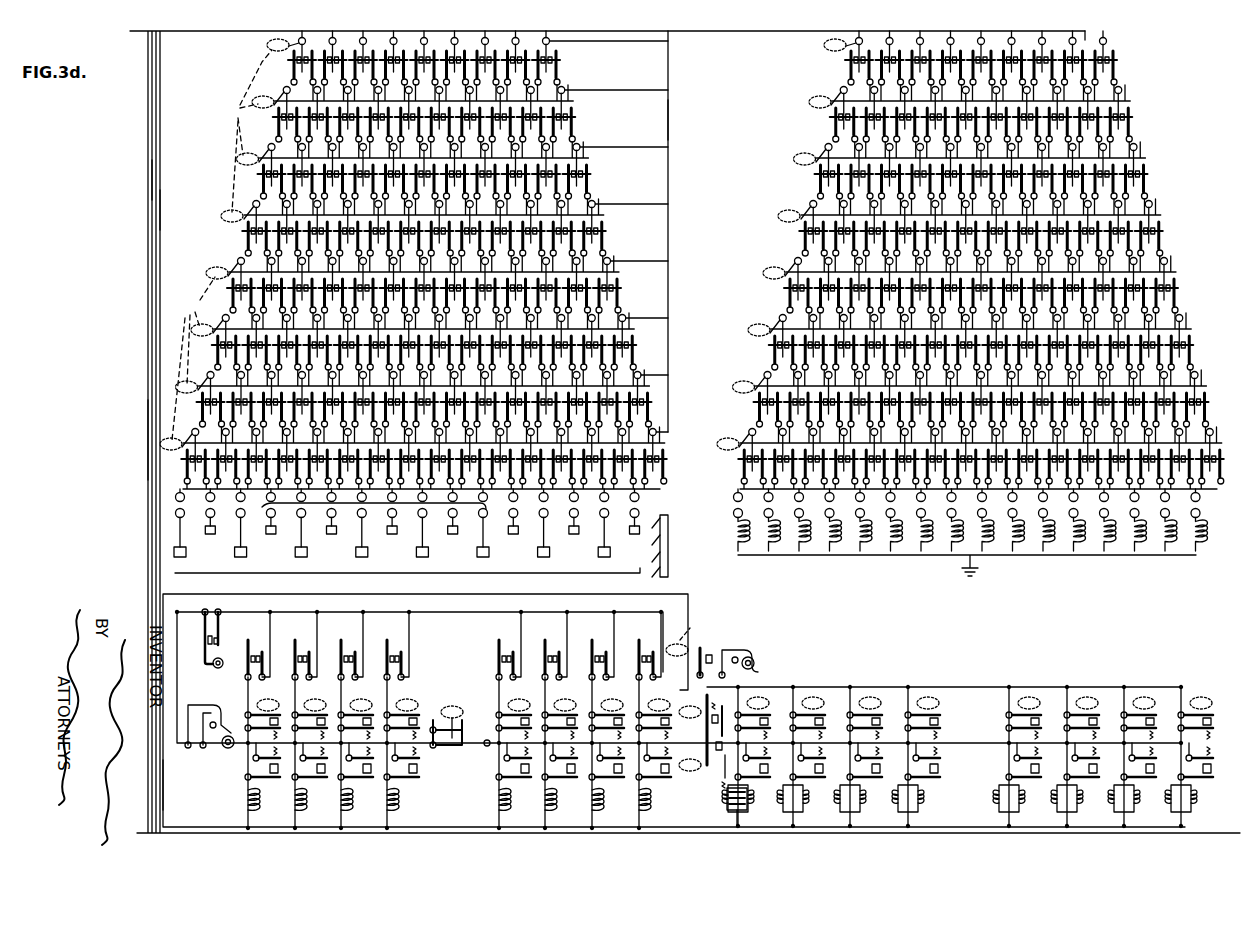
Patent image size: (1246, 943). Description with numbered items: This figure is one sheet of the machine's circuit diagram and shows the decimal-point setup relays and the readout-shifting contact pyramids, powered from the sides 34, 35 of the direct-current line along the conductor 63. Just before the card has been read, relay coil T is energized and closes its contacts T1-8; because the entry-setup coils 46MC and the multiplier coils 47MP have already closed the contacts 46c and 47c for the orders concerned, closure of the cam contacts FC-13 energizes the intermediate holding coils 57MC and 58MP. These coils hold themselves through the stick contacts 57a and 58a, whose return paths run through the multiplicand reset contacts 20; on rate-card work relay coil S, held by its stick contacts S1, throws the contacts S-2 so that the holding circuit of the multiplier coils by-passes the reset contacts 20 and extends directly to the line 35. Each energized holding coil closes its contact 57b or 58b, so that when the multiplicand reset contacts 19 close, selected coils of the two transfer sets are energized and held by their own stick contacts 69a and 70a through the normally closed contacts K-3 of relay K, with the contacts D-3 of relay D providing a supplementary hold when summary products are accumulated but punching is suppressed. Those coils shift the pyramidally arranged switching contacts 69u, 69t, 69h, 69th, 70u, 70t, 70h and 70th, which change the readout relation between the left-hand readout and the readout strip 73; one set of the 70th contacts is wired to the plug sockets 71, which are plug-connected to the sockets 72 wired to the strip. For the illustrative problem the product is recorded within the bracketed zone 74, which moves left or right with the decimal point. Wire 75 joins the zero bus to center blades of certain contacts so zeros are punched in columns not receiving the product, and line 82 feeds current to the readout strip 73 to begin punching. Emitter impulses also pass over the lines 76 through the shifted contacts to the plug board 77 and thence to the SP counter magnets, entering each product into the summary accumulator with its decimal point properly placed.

The switching contacts 69u is at (562, 64).
The switching contacts 69t is at (578, 120).
The switching contacts 69h is at (594, 177).
The switching contacts 69th is at (609, 234).
The switching contacts 70u is at (624, 291).
The switching contacts 70t is at (639, 348).
The switching contacts 70h is at (655, 405).
The switching contacts 70th is at (665, 465).
The D. C. line 34 is at (155, 178).
The D. C. line 35 is at (161, 208).
The conductor 63 is at (148, 438).
The wire 75 is at (672, 130).
The plug sockets 71 is at (640, 497).
The plug sockets 72 is at (640, 513).
The readout strip 73 is at (440, 548).
The bracketed zone 74 is at (372, 520).
The lines 76 is at (1082, 36).
The plug board 77 is at (1200, 500).
The summary products counter magnets SP is at (1183, 553).
The cam contacts FC-13 is at (222, 630).
The relay contacts T1-8 is at (400, 655).
The relay contacts 46c is at (302, 722).
The relay coils 46MC is at (418, 715).
The stick contacts 57a is at (360, 772).
The intermediate relay holding coils 57MC is at (295, 805).
The stick relay contacts S1 is at (463, 711).
The relay contacts S-2 is at (440, 752).
The intermediate relay holding coils 58MP is at (498, 805).
The relay contacts 47c is at (605, 720).
The stick contacts 58a is at (604, 790).
The relay coils 47MP is at (672, 693).
The relay coil T is at (685, 629).
The multiplicand reset contacts 19 is at (718, 645).
The relay coil K is at (700, 705).
The relay contacts K-3 is at (731, 720).
The relay coil D is at (682, 780).
The relay contacts D-3 is at (707, 777).
The multiplicand reset contacts 20 is at (205, 750).
The line 82 is at (163, 800).
The contact 57b is at (793, 710).
The stick contacts 69a is at (942, 770).
The contact 58b is at (1124, 715).
The stick contacts 70a is at (1191, 785).